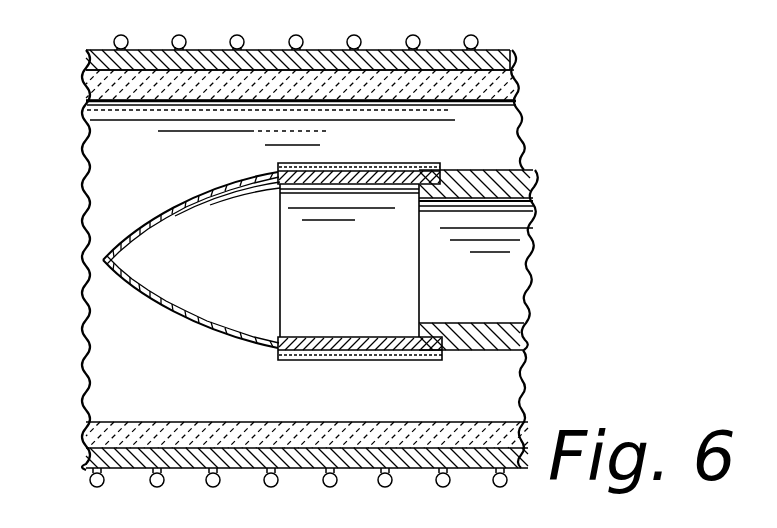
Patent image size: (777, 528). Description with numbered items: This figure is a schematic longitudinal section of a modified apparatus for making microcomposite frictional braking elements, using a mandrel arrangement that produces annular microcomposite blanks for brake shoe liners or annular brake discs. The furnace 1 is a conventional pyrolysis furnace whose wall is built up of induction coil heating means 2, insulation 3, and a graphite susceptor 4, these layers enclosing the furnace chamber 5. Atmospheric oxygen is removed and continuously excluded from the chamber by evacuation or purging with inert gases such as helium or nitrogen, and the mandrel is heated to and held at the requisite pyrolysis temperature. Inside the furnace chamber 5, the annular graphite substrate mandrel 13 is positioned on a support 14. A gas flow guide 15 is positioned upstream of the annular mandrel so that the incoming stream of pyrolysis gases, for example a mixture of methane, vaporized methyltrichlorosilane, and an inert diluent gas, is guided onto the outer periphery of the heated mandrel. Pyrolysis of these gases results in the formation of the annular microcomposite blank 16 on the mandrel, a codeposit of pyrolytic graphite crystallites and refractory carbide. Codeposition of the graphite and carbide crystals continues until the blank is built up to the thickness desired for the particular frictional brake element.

The furnace 1 is at (82, 485).
The induction coil heating means 2 is at (477, 42).
The insulation 3 is at (88, 50).
The graphite susceptor 4 is at (100, 83).
The furnace chamber 5 is at (124, 148).
The annular graphite substrate mandrel 13 is at (318, 337).
The support 14 is at (467, 323).
The gas flow guide 15 is at (154, 210).
The annular microcomposite blank 16 is at (439, 163).